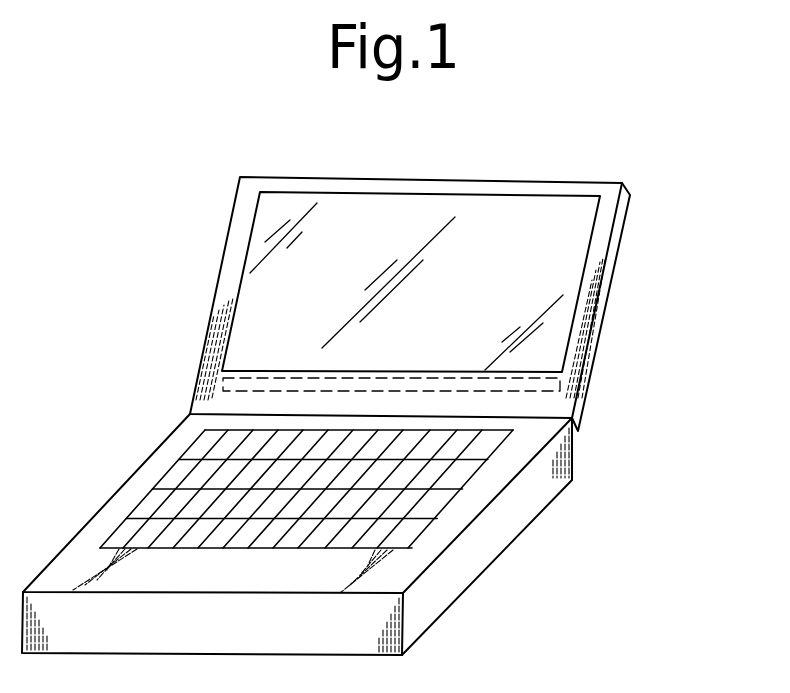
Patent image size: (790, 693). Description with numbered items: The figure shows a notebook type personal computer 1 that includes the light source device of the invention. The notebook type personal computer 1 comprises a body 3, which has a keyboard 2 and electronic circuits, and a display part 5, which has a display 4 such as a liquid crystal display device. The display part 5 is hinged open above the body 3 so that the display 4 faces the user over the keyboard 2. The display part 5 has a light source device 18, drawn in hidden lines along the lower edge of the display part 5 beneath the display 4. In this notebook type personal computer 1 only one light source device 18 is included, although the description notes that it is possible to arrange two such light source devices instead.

The notebook type personal computer 1 is at (622, 321).
The keyboard 2 is at (463, 475).
The body 3 is at (470, 561).
The display 4 is at (388, 212).
The display part 5 is at (520, 190).
The light source device 18 is at (560, 386).